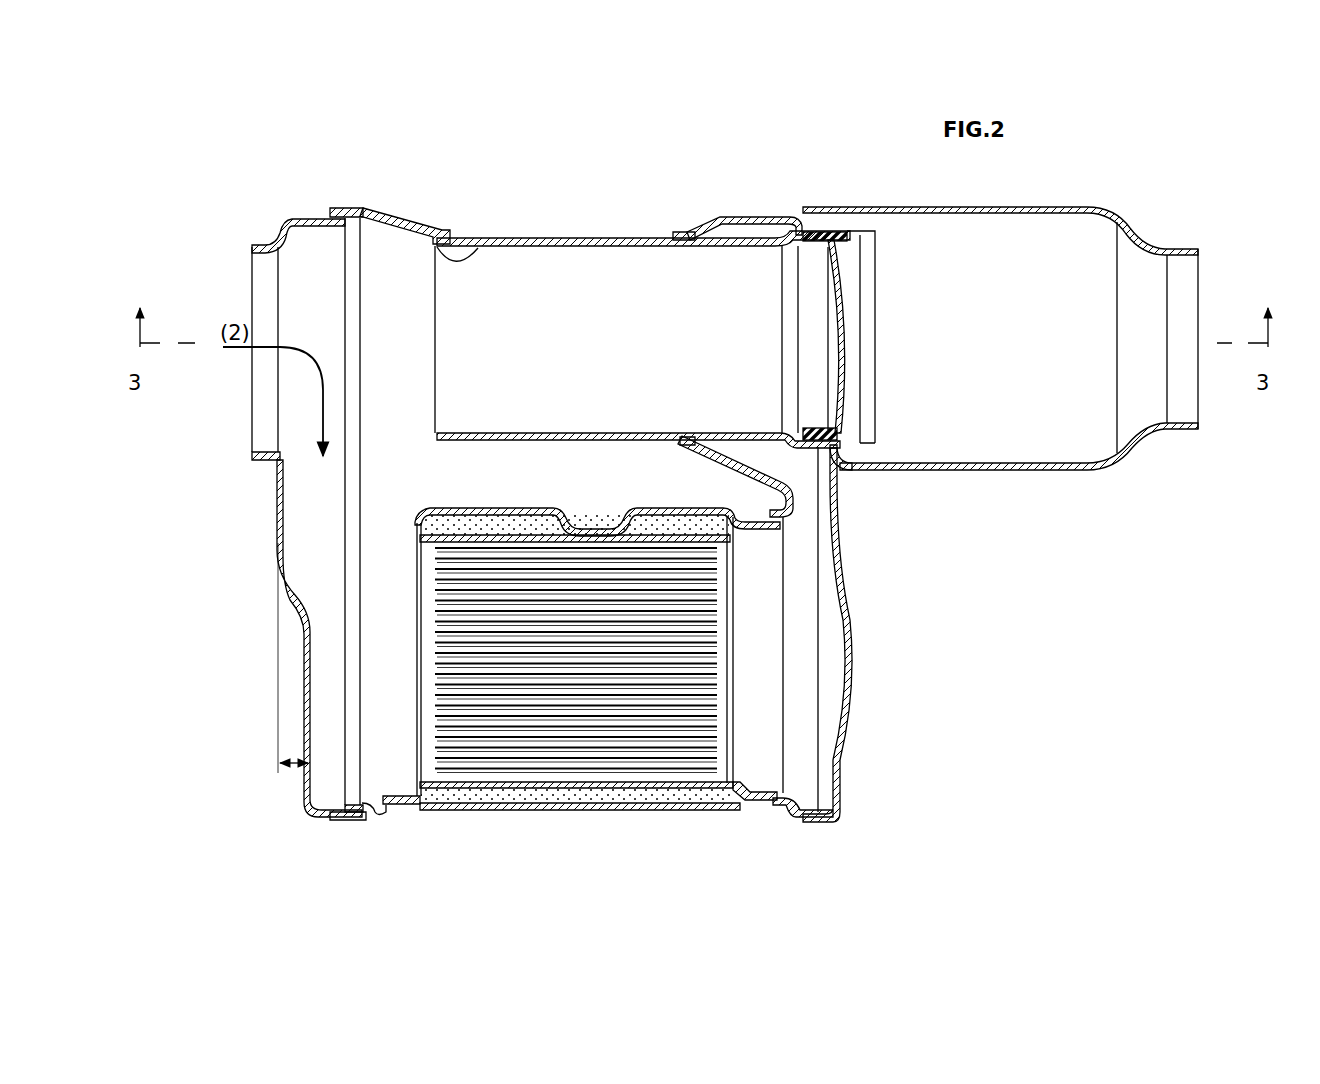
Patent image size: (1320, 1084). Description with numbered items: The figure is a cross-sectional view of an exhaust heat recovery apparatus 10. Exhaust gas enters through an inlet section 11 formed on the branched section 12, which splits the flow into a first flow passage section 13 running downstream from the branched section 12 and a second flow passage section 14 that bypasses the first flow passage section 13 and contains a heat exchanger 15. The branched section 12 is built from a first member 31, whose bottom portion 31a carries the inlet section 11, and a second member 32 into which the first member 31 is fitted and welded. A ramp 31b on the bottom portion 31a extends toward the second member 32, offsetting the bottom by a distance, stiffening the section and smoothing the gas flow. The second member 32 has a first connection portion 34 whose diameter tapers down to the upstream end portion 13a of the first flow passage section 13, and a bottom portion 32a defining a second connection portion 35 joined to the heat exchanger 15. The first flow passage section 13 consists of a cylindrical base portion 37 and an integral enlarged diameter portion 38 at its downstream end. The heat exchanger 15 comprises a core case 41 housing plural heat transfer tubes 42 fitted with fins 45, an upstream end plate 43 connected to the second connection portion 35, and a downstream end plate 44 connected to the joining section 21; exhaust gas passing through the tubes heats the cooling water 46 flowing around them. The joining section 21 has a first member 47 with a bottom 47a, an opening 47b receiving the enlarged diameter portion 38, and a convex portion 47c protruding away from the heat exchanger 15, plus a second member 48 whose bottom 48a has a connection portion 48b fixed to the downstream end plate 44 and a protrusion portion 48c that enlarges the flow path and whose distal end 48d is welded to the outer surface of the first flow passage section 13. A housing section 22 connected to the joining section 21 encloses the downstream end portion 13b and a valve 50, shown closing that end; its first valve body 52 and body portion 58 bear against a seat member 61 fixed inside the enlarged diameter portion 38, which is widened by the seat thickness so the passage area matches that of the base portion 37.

The exhaust heat recovery apparatus 10 is at (690, 509).
The inlet section 11 is at (255, 248).
The branched section 12 is at (318, 193).
The first flow passage section 13 is at (677, 286).
The upstream end portion of the first flow passage section 13a is at (480, 247).
The downstream end portion of the first flow passage section 13b is at (850, 232).
The second flow passage section 14 is at (581, 689).
The heat exchanger 15 is at (535, 822).
The joining section 21 is at (1000, 515).
The housing section 22 is at (1100, 198).
The first member 31 is at (274, 489).
The bottom portion of the first member 31a is at (283, 527).
The ramp 31b is at (297, 588).
The second member 32 is at (404, 459).
The bottom portion of the second member 32a is at (355, 470).
The first connection portion 34 is at (408, 223).
The second connection portion 35 is at (378, 814).
The cylindrical base portion 37 is at (553, 236).
The enlarged diameter portion 38 is at (813, 231).
The core case 41 is at (648, 808).
The heat transfer tube 42 is at (705, 790).
The upstream end plate 43 is at (403, 806).
The downstream end plate 44 is at (757, 802).
The fins 45 is at (513, 546).
The cooling water 46 is at (587, 796).
The first member of the joining section 47 is at (889, 633).
The bottom of the first member 47a is at (850, 553).
The opening 47b is at (865, 463).
The convex portion 47c is at (855, 660).
The second member of the joining section 48 is at (764, 511).
The bottom of the second member 48a is at (800, 497).
The connection portion 48b is at (776, 812).
The protrusion portion 48c is at (747, 473).
The distal end 48d is at (683, 231).
The valve 50 is at (912, 338).
The first valve body 52 is at (882, 325).
The body portion 58 is at (820, 380).
The seat member 61 is at (822, 425).